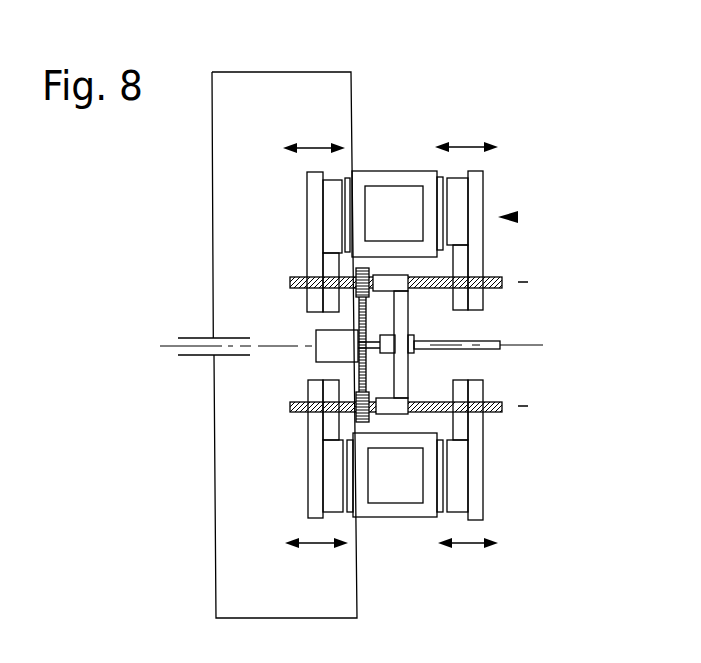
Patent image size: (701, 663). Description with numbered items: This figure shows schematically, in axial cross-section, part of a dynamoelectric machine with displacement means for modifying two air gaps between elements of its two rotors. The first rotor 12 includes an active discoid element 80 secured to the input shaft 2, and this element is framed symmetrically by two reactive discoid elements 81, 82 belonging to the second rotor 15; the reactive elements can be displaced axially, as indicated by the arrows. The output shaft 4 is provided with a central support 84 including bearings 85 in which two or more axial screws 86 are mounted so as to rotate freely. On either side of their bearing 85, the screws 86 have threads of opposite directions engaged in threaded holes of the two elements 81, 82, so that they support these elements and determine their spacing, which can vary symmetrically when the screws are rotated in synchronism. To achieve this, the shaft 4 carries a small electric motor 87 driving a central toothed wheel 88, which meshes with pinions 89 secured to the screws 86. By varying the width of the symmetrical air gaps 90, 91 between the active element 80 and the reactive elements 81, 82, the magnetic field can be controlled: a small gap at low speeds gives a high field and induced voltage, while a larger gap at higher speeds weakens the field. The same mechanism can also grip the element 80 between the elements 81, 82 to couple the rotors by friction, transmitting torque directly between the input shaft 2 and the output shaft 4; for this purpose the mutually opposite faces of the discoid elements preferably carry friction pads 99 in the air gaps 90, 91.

The first rotor 12 is at (243, 42).
The input shaft 2 is at (193, 335).
The active discoid element 80 is at (395, 180).
The reactive discoid element 81 is at (315, 199).
The reactive discoid element 82 is at (475, 192).
The air gap 90 is at (348, 180).
The air gap 91 is at (440, 178).
The friction pads 99 is at (342, 237).
The pinions 89 is at (355, 272).
The axial screws 86 is at (492, 280).
The central support 84 is at (403, 327).
The electric motor 87 is at (313, 333).
The central toothed wheel 88 is at (359, 365).
The output shaft 4 is at (478, 352).
The bearings 85 is at (387, 448).
The second rotor 15 is at (518, 217).